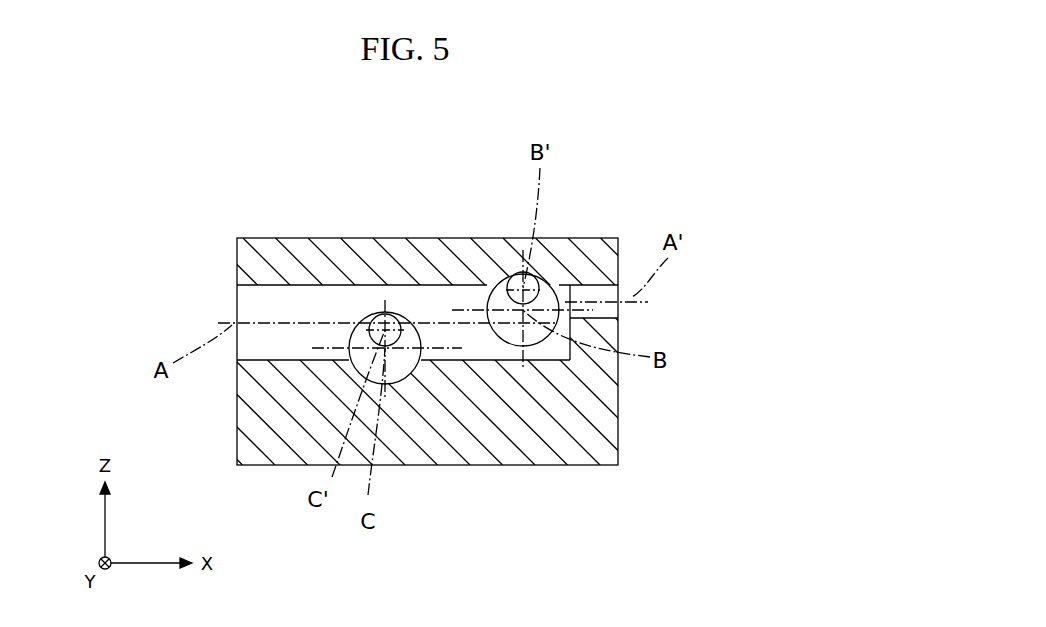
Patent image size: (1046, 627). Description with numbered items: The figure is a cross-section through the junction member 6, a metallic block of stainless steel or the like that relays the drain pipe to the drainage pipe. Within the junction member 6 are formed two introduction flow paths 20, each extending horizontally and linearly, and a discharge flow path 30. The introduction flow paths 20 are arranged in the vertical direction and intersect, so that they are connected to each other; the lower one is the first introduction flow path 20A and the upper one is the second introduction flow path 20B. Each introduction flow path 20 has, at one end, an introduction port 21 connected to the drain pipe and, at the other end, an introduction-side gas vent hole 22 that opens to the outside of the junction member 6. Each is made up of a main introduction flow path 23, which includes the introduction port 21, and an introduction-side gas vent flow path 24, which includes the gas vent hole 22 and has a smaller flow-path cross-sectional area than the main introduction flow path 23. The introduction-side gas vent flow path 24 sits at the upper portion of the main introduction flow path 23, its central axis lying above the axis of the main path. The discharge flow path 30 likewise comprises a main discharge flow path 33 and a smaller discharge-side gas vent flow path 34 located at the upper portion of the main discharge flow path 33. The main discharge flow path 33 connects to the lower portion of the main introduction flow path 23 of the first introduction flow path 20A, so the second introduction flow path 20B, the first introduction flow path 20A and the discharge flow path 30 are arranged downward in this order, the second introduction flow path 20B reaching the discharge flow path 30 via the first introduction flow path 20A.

The junction member 6 is at (228, 232).
The introduction flow path 20 is at (422, 289).
The first introduction flow path 20A is at (317, 274).
The second introduction flow path 20B is at (549, 360).
The introduction port 21 is at (237, 300).
The introduction-side gas vent hole 22 is at (618, 313).
The main introduction flow path 23 is at (383, 284).
The introduction-side gas vent flow path 24 is at (507, 282).
The discharge flow path 30 is at (342, 375).
The main discharge flow path 33 is at (411, 378).
The discharge-side gas vent flow path 34 is at (403, 322).